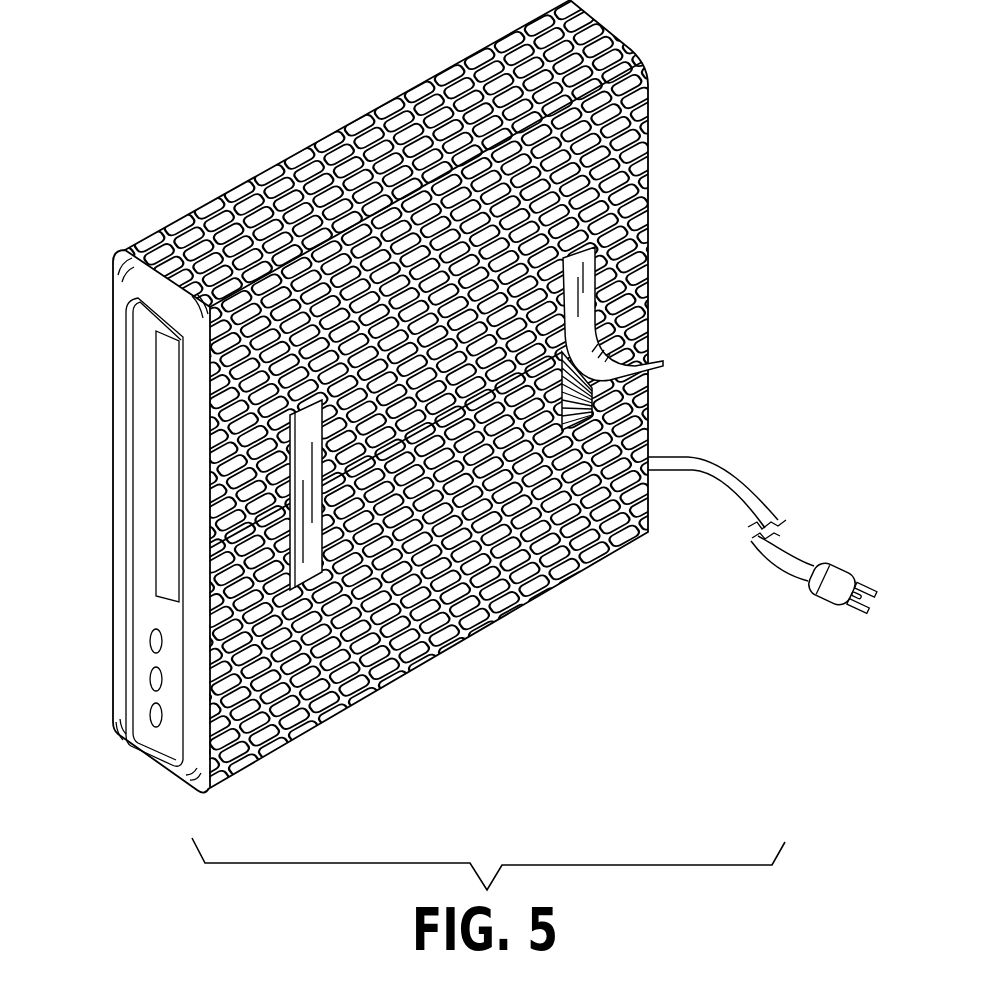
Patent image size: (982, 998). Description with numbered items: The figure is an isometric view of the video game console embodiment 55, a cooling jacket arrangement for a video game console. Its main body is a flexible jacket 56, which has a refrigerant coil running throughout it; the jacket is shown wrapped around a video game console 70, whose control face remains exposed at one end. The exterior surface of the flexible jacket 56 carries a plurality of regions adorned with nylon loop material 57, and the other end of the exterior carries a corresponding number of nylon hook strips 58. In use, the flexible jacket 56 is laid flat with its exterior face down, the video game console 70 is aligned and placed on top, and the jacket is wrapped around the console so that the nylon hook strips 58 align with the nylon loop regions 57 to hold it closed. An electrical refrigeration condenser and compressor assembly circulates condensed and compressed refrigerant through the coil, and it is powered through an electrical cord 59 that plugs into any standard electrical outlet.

The video game console embodiment 55 is at (236, 74).
The flexible jacket 56 is at (440, 687).
The nylon loop material 57 is at (583, 400).
The nylon hook strips 58 is at (578, 280).
The electrical cord 59 is at (780, 563).
The video game console 70 is at (148, 620).